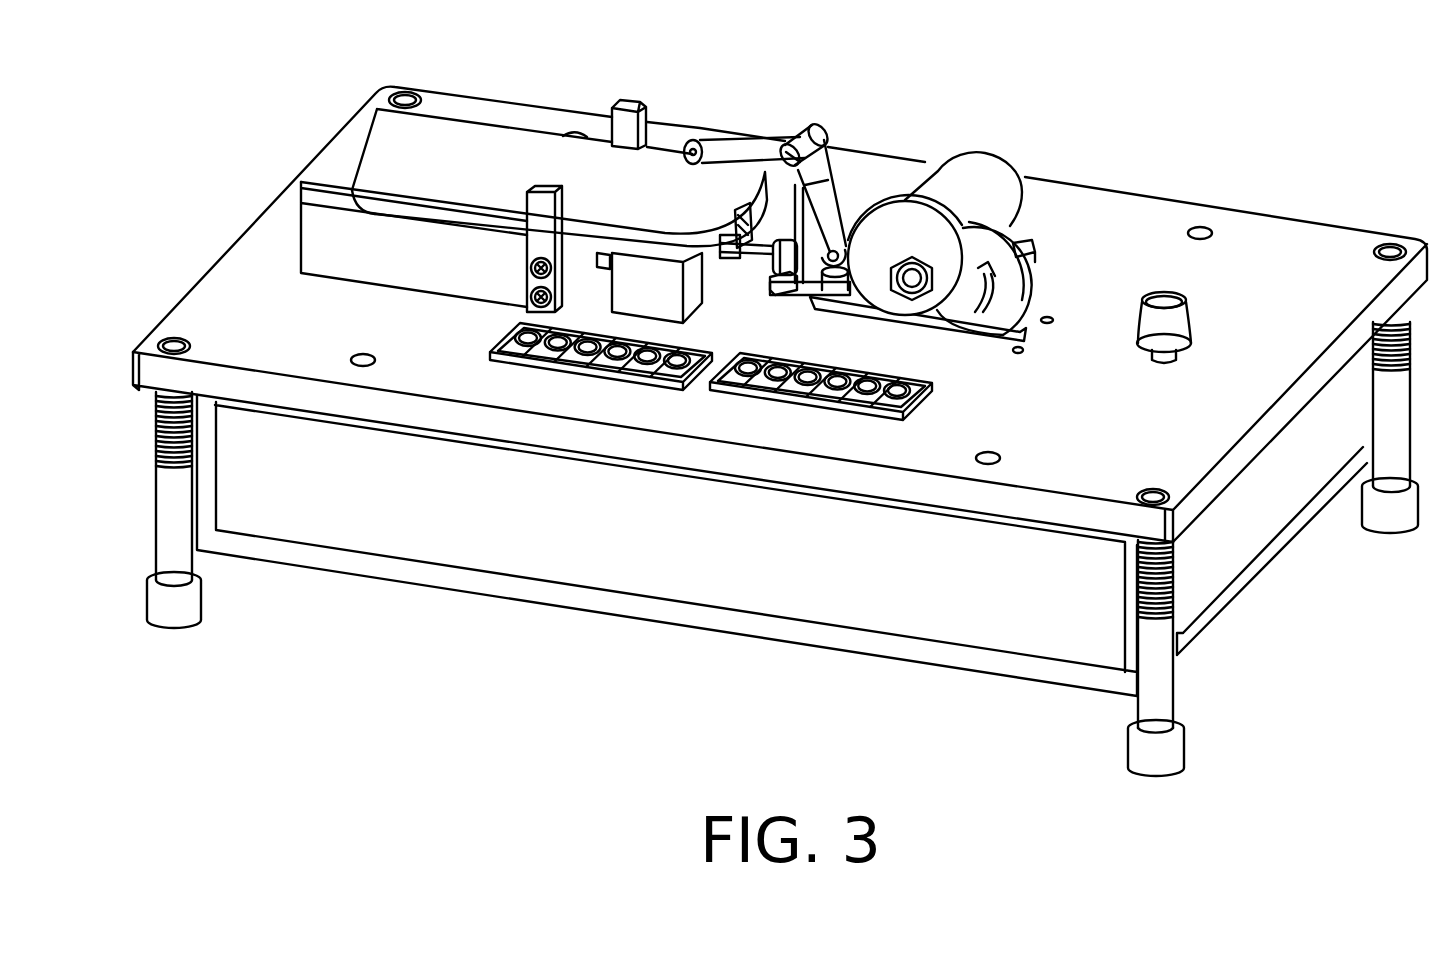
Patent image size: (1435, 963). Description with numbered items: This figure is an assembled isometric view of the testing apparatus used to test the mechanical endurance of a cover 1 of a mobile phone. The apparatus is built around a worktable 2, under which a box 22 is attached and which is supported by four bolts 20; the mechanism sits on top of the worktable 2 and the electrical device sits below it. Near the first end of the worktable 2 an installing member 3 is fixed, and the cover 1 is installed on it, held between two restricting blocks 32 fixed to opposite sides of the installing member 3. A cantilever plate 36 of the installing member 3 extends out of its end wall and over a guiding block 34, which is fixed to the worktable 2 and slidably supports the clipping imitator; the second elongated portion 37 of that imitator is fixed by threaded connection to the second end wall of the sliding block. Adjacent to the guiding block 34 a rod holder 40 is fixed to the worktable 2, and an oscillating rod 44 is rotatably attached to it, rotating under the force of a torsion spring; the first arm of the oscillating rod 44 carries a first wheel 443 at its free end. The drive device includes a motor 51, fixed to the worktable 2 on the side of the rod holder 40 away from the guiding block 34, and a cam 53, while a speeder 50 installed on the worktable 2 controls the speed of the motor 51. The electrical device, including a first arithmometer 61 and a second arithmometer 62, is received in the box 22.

The cover 1 is at (462, 143).
The worktable 2 is at (1252, 240).
The installing member 3 is at (333, 243).
The bolts 20 is at (172, 610).
The box 22 is at (1018, 608).
The restricting blocks 32 is at (632, 118).
The guiding block 34 is at (650, 285).
The cantilever plate 36 is at (355, 160).
The second elongated portion 37 is at (758, 250).
The rod holder 40 is at (803, 227).
The oscillating rod 44 is at (758, 152).
The first wheel 443 is at (698, 137).
The speeder 50 is at (1162, 300).
The motor 51 is at (988, 178).
The cam 53 is at (997, 260).
The first arithmometer 61 is at (508, 355).
The second arithmometer 62 is at (757, 390).